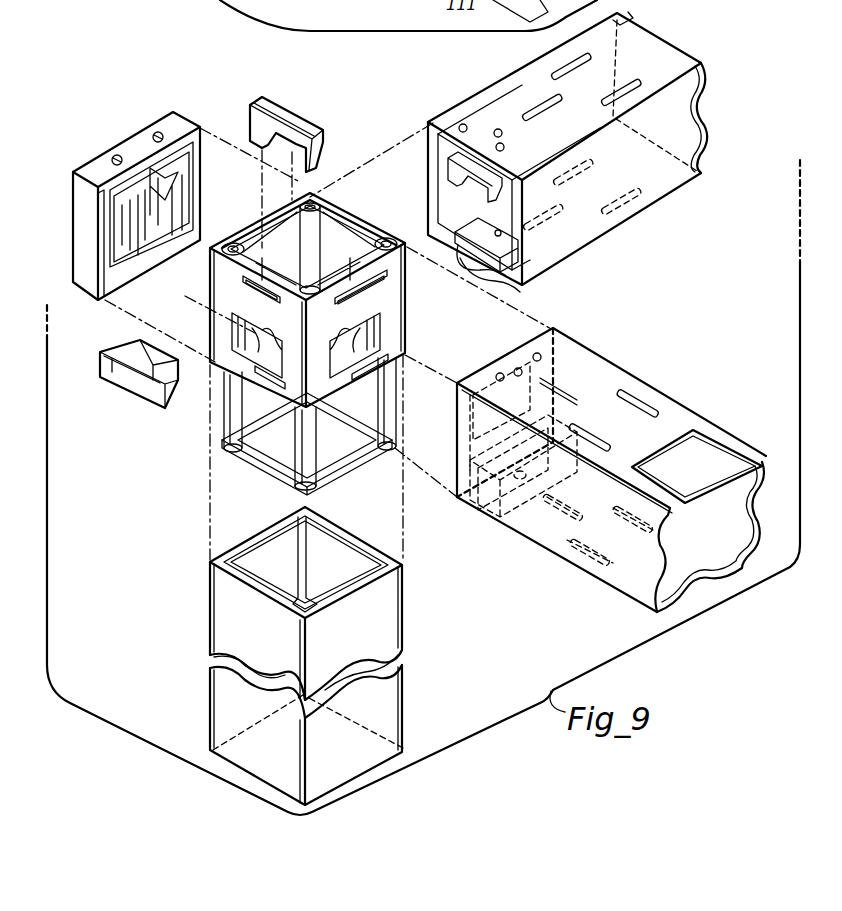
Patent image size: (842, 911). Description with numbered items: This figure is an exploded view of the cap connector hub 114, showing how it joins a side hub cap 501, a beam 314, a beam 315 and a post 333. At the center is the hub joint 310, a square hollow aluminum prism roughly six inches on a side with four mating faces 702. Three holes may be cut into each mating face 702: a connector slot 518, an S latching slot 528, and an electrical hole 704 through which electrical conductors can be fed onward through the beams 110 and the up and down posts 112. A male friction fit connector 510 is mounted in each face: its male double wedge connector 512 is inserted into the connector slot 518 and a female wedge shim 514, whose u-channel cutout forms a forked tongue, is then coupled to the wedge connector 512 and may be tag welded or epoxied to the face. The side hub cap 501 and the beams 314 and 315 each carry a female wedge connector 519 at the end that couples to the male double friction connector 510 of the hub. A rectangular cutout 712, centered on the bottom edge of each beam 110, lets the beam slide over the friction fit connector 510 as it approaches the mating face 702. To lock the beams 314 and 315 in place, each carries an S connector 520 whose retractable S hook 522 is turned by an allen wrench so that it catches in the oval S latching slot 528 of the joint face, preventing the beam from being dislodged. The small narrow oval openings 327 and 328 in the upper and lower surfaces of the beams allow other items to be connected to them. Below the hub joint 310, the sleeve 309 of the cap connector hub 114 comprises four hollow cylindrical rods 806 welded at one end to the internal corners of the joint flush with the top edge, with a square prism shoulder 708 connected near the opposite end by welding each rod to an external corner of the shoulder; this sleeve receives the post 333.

The beam 110 is at (693, 138).
The post 112 is at (210, 630).
The cap connector hub 114 is at (341, 160).
The sleeve 309 is at (360, 462).
The hub joint 310 is at (407, 328).
The beam 314 is at (620, 17).
The beam 315 is at (727, 428).
The small narrow oval opening 327 is at (547, 403).
The oval opening 328 is at (637, 410).
The post 333 is at (396, 632).
The side hub cap 501 is at (114, 145).
The male friction fit connector 510 is at (382, 283).
The male double wedge connector 512 is at (123, 388).
The female wedge shim 514 is at (292, 118).
The connector slot 518 is at (243, 282).
The female wedge connector 519 is at (173, 167).
The S connector 520 is at (480, 222).
The S hook 522 is at (517, 258).
The S latching slot 528 is at (396, 378).
The mating face 702 is at (200, 307).
The electrical hole 704 is at (400, 358).
The square prism shoulder 708 is at (292, 470).
The rectangular cutout 712 is at (497, 293).
The hollow cylindrical rod 806 is at (302, 241).